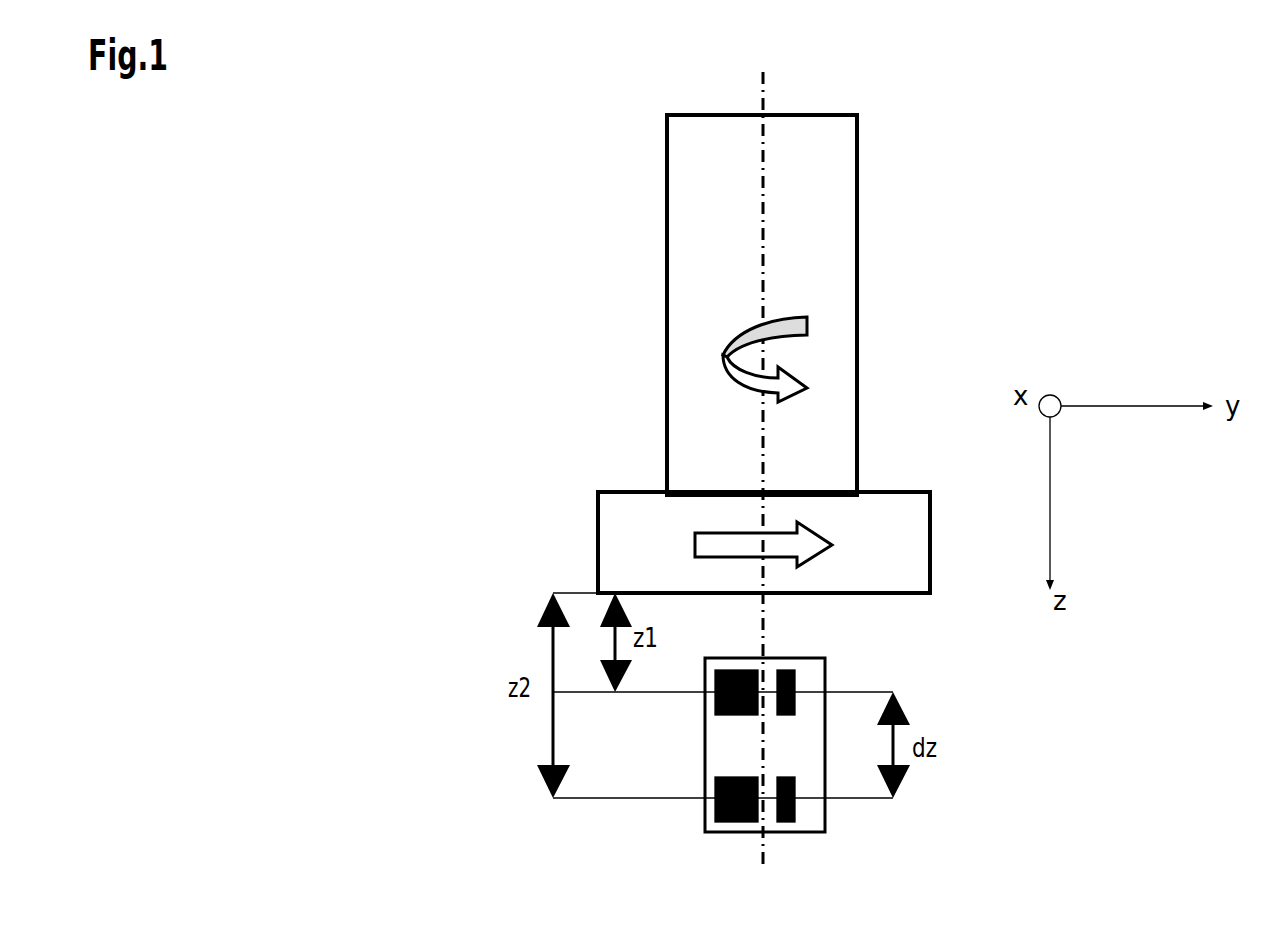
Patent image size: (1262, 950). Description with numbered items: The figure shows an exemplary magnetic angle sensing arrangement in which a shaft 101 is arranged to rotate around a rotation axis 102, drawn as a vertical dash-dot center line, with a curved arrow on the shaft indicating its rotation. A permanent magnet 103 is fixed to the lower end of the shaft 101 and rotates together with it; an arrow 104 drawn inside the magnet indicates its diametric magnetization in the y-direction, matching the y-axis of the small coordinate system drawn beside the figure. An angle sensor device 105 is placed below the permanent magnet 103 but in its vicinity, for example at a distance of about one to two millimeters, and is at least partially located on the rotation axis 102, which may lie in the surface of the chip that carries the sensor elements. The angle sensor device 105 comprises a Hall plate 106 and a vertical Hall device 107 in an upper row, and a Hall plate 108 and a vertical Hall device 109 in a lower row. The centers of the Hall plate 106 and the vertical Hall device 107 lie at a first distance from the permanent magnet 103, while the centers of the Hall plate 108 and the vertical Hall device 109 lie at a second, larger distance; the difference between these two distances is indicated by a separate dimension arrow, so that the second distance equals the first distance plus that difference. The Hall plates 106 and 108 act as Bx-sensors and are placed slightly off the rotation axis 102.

The shaft 101 is at (667, 257).
The rotation axis 102 is at (763, 100).
The permanent magnet 103 is at (598, 533).
The arrow 104 is at (707, 542).
The angle sensor device 105 is at (788, 833).
The Hall plate 106 is at (715, 703).
The vertical Hall device 107 is at (795, 680).
The Hall plate 108 is at (715, 813).
The vertical Hall device 109 is at (795, 807).